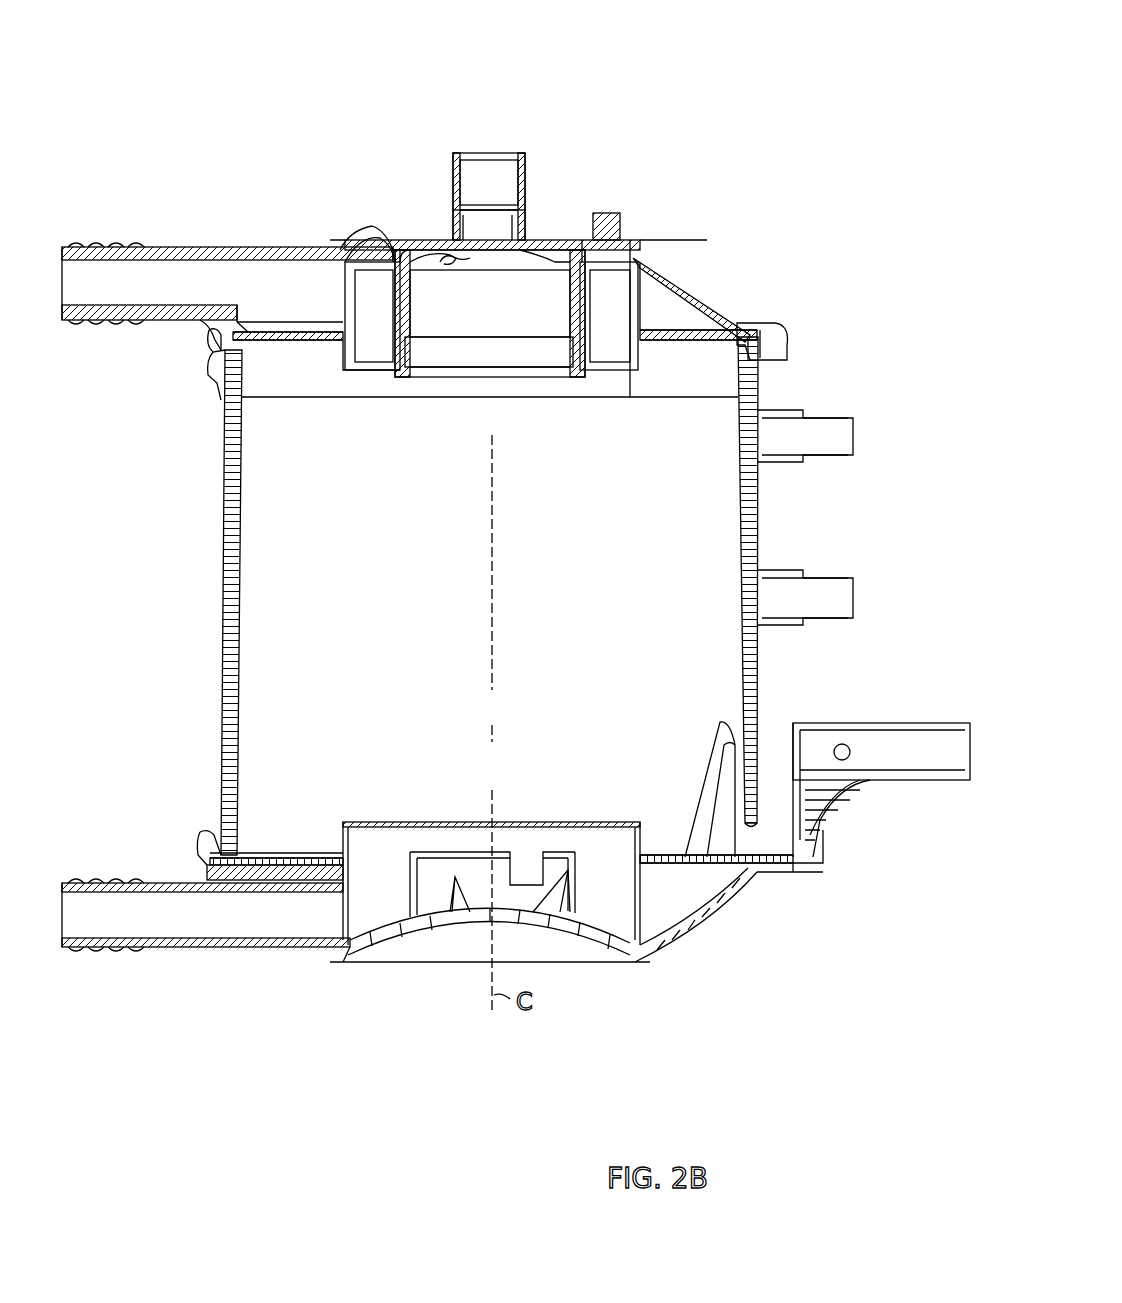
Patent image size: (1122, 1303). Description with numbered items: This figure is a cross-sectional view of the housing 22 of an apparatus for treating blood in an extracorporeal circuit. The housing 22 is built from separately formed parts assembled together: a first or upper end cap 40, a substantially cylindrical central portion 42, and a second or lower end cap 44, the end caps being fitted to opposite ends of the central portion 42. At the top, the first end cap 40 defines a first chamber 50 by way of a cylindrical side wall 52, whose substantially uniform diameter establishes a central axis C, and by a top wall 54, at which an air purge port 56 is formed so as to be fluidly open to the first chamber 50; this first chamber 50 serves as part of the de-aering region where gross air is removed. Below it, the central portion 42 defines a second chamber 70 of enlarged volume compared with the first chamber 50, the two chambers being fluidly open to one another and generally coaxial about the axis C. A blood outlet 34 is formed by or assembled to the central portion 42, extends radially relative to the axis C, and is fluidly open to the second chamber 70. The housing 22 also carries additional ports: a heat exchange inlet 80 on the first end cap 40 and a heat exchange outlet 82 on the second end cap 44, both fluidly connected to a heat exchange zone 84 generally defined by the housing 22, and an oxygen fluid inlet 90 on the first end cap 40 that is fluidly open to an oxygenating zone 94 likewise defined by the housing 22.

The housing 22 is at (824, 138).
The blood outlet 34 is at (913, 720).
The first end cap 40 is at (700, 285).
The central portion 42 is at (758, 660).
The second end cap 44 is at (682, 945).
The first chamber 50 is at (500, 305).
The side wall 52 is at (565, 302).
The top wall 54 is at (448, 260).
The air purge port 56 is at (503, 150).
The second chamber 70 is at (287, 638).
The heat exchange inlet 80 is at (112, 245).
The heat exchange outlet 82 is at (175, 950).
The heat exchange zone 84 is at (380, 848).
The oxygen fluid inlet 90 is at (373, 230).
The oxygenating zone 94 is at (293, 807).